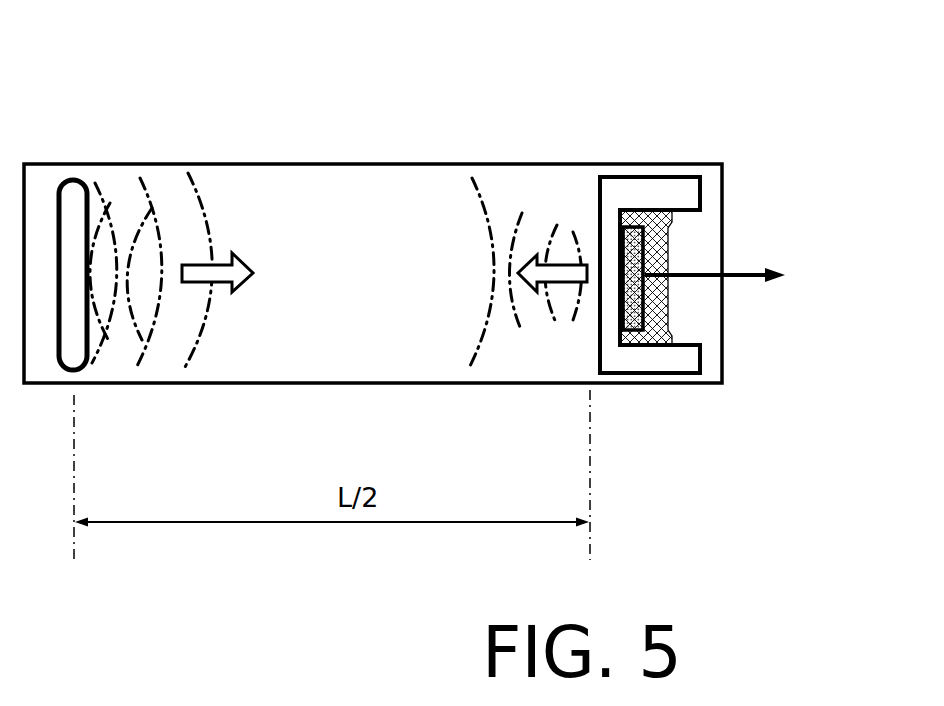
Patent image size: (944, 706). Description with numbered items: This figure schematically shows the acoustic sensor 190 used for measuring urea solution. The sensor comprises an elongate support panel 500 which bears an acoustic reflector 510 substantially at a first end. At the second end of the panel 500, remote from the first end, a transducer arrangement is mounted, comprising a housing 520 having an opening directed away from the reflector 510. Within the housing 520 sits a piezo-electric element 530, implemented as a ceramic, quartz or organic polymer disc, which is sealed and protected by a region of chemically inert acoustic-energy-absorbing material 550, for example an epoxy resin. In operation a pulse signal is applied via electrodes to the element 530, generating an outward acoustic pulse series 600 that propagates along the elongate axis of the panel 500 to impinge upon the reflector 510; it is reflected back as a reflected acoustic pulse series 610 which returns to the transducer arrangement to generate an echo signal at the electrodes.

The acoustic sensor 190 is at (199, 70).
The elongate support panel 500 is at (318, 355).
The acoustic reflector 510 is at (72, 192).
The reflected acoustic pulse series 610 is at (219, 271).
The outward acoustic pulse series 600 is at (560, 276).
The housing 520 is at (618, 197).
The acoustic-energy-absorbing material 550 is at (659, 215).
The piezo-electric element 530 is at (630, 322).